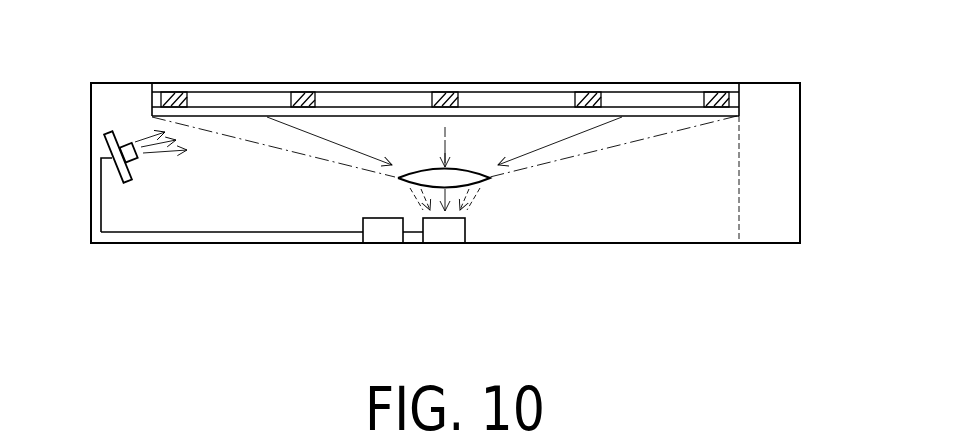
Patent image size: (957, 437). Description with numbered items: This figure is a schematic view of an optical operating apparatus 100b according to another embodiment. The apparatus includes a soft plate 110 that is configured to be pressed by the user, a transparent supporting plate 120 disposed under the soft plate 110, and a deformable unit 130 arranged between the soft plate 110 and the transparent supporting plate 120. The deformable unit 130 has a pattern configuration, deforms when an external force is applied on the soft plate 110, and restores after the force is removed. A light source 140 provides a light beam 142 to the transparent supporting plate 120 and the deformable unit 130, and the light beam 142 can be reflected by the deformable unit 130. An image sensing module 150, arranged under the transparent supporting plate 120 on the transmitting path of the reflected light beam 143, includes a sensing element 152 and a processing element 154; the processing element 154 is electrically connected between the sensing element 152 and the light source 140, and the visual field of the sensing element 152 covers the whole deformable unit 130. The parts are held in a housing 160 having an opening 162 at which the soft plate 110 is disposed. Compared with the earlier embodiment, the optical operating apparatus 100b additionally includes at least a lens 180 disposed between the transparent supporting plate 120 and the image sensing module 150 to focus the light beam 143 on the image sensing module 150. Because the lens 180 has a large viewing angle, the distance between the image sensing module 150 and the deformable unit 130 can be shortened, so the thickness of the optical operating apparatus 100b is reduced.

The optical operating apparatus 100b is at (720, 309).
The soft plate 110 is at (364, 87).
The transparent supporting plate 120 is at (738, 113).
The deformable unit 130 is at (718, 98).
The light source 140 is at (112, 133).
The light beam 142 is at (140, 132).
The light beam reflected by the deformable unit 143 is at (447, 143).
The image sensing module 150 is at (412, 283).
The sensing element 152 is at (444, 260).
The processing element 154 is at (377, 244).
The housing 160 is at (800, 207).
The opening 162 is at (736, 80).
The lens 180 is at (470, 175).